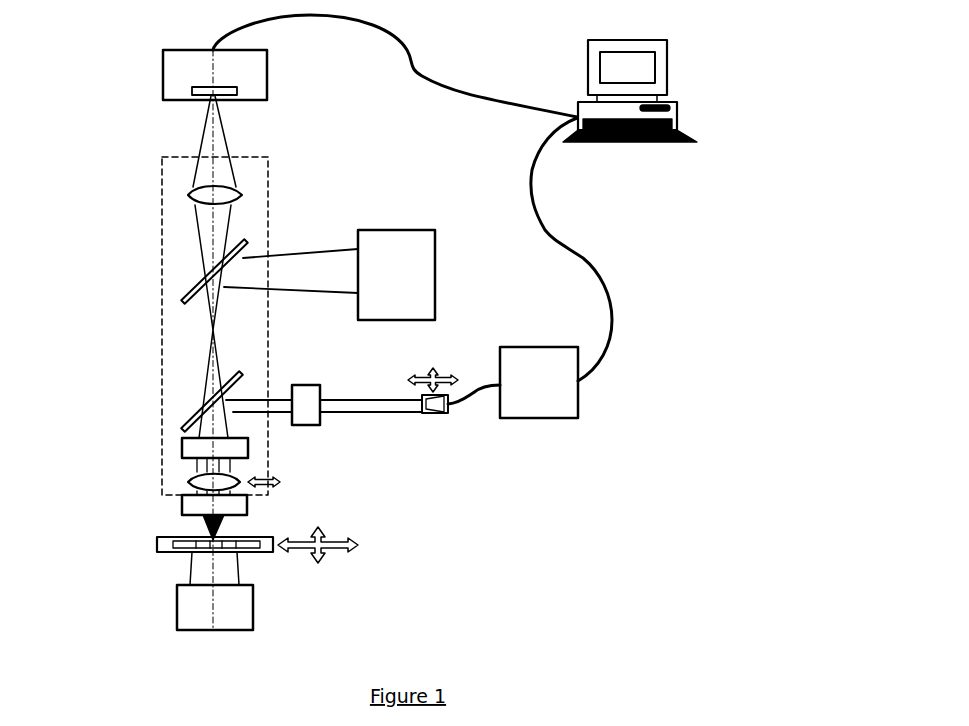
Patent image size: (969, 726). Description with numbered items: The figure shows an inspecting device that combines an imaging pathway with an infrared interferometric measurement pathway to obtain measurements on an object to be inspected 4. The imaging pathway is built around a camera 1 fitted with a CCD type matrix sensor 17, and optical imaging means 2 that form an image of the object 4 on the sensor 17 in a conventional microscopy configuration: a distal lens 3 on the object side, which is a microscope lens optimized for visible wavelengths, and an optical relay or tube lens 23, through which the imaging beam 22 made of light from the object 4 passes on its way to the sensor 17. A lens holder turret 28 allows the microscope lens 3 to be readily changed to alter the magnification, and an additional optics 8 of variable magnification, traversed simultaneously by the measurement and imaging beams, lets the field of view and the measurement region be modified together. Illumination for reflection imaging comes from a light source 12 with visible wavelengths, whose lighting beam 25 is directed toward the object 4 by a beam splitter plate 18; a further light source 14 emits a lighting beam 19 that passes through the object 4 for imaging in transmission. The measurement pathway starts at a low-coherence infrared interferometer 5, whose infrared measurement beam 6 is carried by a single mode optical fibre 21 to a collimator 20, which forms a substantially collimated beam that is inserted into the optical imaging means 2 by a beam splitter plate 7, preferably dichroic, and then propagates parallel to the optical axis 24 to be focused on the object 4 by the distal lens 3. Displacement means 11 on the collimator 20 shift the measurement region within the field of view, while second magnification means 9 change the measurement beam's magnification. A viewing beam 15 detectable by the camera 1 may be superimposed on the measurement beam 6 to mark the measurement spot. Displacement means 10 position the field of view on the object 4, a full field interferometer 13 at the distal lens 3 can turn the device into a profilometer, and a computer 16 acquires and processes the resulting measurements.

The camera 1 is at (163, 77).
The CCD type matrix sensor 17 is at (192, 90).
The optical axis 24 is at (212, 145).
The optical relay or tube lens 23 is at (188, 195).
The imaging beam 22 is at (199, 232).
The beam splitter plate 18 is at (180, 302).
The optical imaging means 2 is at (154, 332).
The beam splitter plate (coupling means) 7 is at (180, 428).
The additional optics 8 is at (182, 450).
The distal lens 3 is at (188, 482).
The full field interferometer 13 is at (182, 505).
The object to be inspected 4 is at (157, 543).
The lighting beam 19 is at (192, 568).
The light source 14 is at (177, 608).
The lighting beam 25 is at (312, 255).
The light source 12 is at (395, 230).
The computer 16 is at (667, 68).
The low-coherence infrared interferometer 5 is at (540, 424).
The single mode optical fibre 21 is at (470, 402).
The collimator 20 is at (437, 413).
The displacement means 11 is at (440, 366).
The viewing beam 15 is at (380, 412).
The infrared measurement beam 6 is at (345, 412).
The second magnification means 9 is at (305, 425).
The lens holder turret 28 is at (283, 480).
The displacement means 10 is at (358, 545).